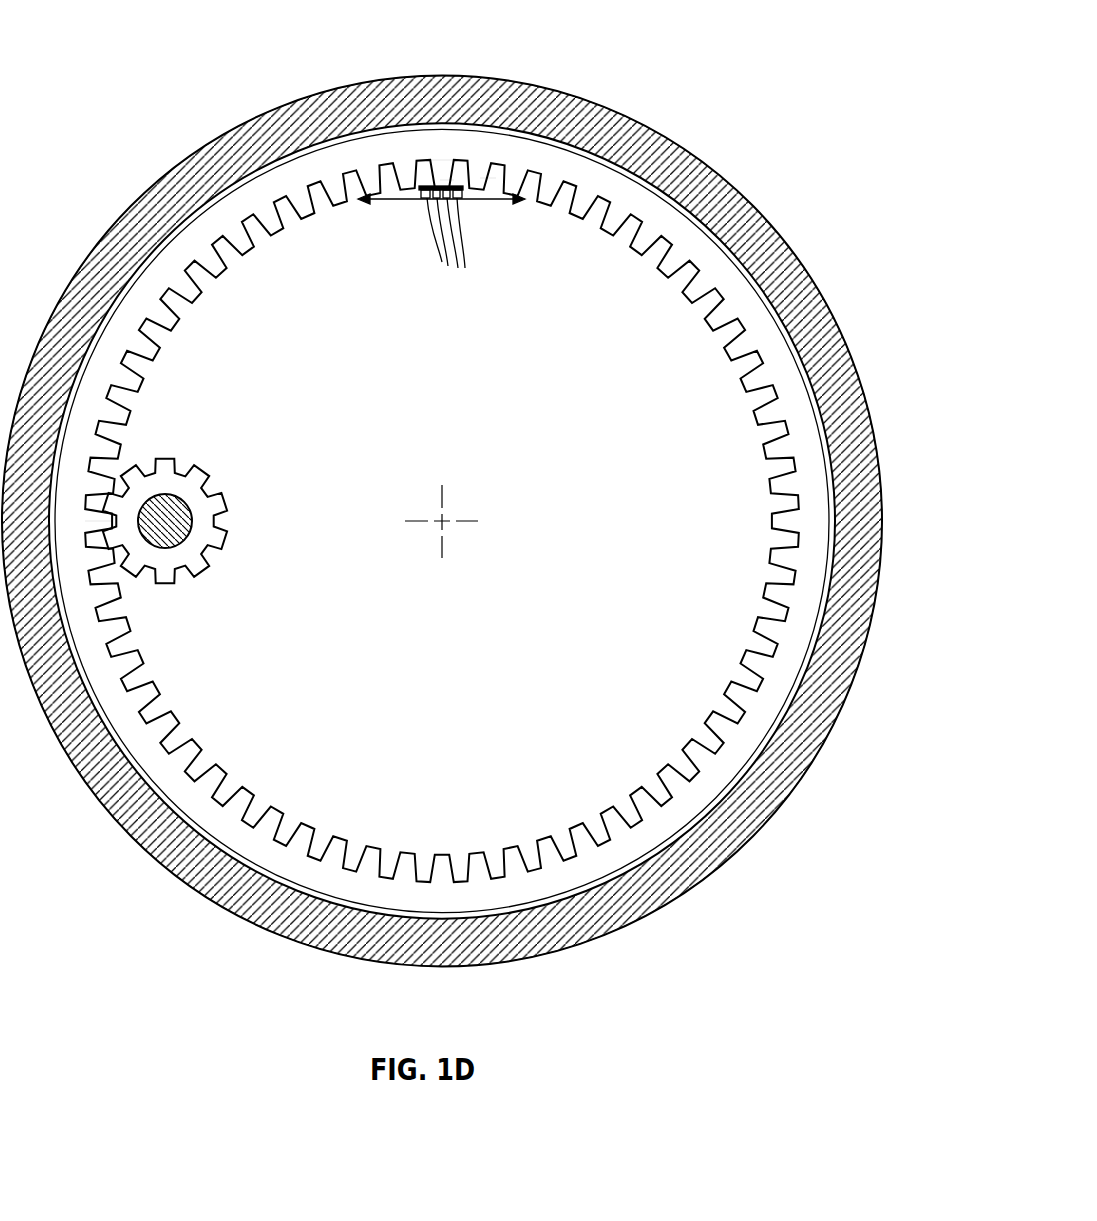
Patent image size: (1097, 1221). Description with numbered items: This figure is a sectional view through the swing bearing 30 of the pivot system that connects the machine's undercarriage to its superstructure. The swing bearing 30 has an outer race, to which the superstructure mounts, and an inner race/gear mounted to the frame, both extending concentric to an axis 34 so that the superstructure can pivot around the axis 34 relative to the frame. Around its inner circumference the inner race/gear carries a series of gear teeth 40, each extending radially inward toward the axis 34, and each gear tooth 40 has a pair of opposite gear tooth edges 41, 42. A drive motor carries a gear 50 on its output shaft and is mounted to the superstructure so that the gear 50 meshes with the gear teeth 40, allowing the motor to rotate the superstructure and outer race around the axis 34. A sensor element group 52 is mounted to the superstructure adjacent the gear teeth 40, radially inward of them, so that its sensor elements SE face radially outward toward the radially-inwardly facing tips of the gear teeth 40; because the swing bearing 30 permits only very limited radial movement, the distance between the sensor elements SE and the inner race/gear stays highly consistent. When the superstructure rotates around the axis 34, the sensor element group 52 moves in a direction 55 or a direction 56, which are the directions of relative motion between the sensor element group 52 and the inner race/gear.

The swing bearing 30 is at (442, 498).
The axis 34 is at (440, 519).
The gear teeth 40 is at (442, 175).
The gear tooth edge 41 is at (488, 177).
The gear tooth edge 42 is at (447, 180).
The gear 50 is at (222, 488).
The sensor element group 52 is at (423, 183).
The direction 55 is at (495, 199).
The direction 56 is at (390, 200).
The sensor elements SE is at (446, 246).